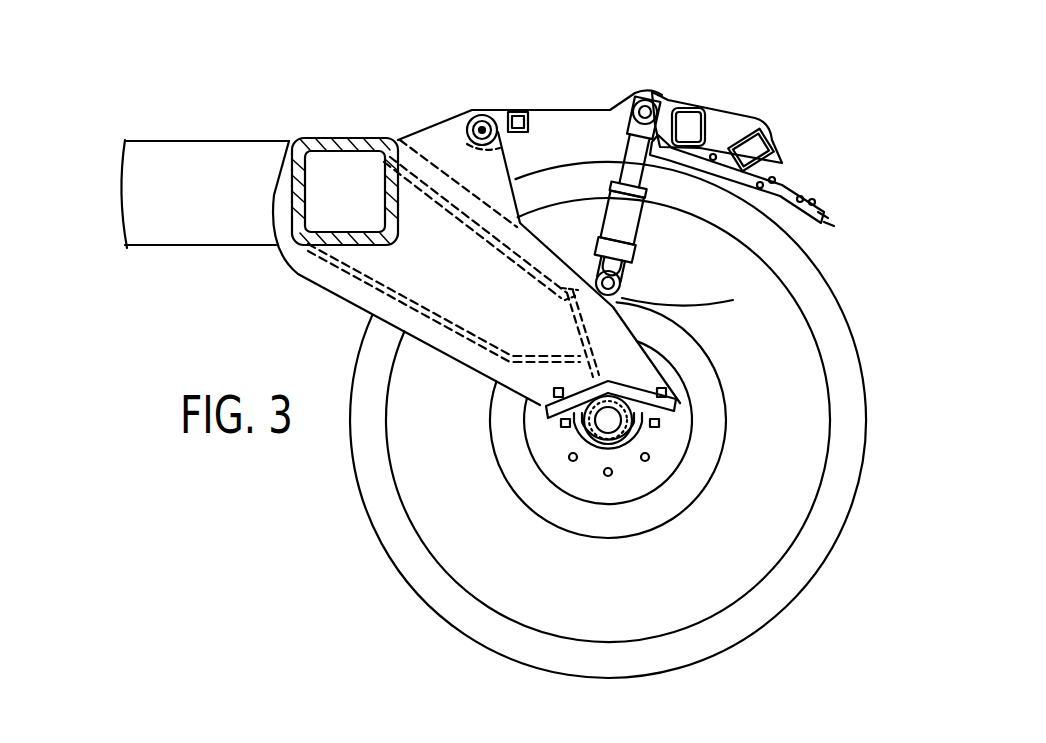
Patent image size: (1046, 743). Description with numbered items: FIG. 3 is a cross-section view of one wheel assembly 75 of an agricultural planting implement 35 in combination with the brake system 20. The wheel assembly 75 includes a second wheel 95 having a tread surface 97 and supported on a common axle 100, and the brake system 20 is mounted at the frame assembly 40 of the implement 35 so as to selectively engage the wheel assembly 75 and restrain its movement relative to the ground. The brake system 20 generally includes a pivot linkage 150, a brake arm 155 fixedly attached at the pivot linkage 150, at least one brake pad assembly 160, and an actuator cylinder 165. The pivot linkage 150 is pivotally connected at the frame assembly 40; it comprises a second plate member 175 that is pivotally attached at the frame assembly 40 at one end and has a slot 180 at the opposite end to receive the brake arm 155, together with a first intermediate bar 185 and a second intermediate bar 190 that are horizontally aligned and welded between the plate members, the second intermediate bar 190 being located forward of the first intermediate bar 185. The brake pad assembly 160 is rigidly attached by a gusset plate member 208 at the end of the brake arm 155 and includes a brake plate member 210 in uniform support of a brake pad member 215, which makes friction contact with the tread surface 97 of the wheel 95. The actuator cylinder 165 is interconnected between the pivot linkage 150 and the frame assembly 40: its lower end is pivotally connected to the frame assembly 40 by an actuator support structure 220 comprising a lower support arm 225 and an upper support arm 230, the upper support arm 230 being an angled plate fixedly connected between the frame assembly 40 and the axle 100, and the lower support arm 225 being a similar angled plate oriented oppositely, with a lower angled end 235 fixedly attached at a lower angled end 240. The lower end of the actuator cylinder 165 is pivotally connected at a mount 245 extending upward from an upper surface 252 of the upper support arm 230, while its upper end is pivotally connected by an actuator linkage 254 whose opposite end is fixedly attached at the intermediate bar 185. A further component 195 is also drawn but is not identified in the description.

The brake system 20 is at (777, 86).
The planting implement 35 is at (145, 132).
The frame assembly 40 is at (198, 138).
The wheel assembly 75 is at (862, 550).
The second tire or wheel 95 is at (873, 416).
The tread surface 97 is at (864, 346).
The common axle 100 is at (599, 455).
The pivot linkage 150 is at (585, 88).
The brake arm 155 is at (784, 168).
The brake pad assembly 160 is at (819, 229).
The actuator cylinder 165 is at (650, 235).
The second plate member 175 is at (745, 113).
The slot 180 is at (775, 131).
The first intermediate bar 185 is at (712, 132).
The second intermediate bar 190 is at (534, 125).
The mounting block 195 is at (715, 128).
The gusset plate member 208 is at (790, 186).
The brake plate member 210 is at (812, 206).
The brake pad member 215 is at (832, 246).
The actuator support structure 220 is at (434, 350).
The lower support arm 225 is at (346, 302).
The upper support arm 230 is at (424, 172).
The lower angled end 235 is at (534, 368).
The lower angled end 240 is at (598, 357).
The mount 245 is at (694, 297).
The upper surface 252 is at (560, 302).
The actuator linkage 254 is at (660, 100).